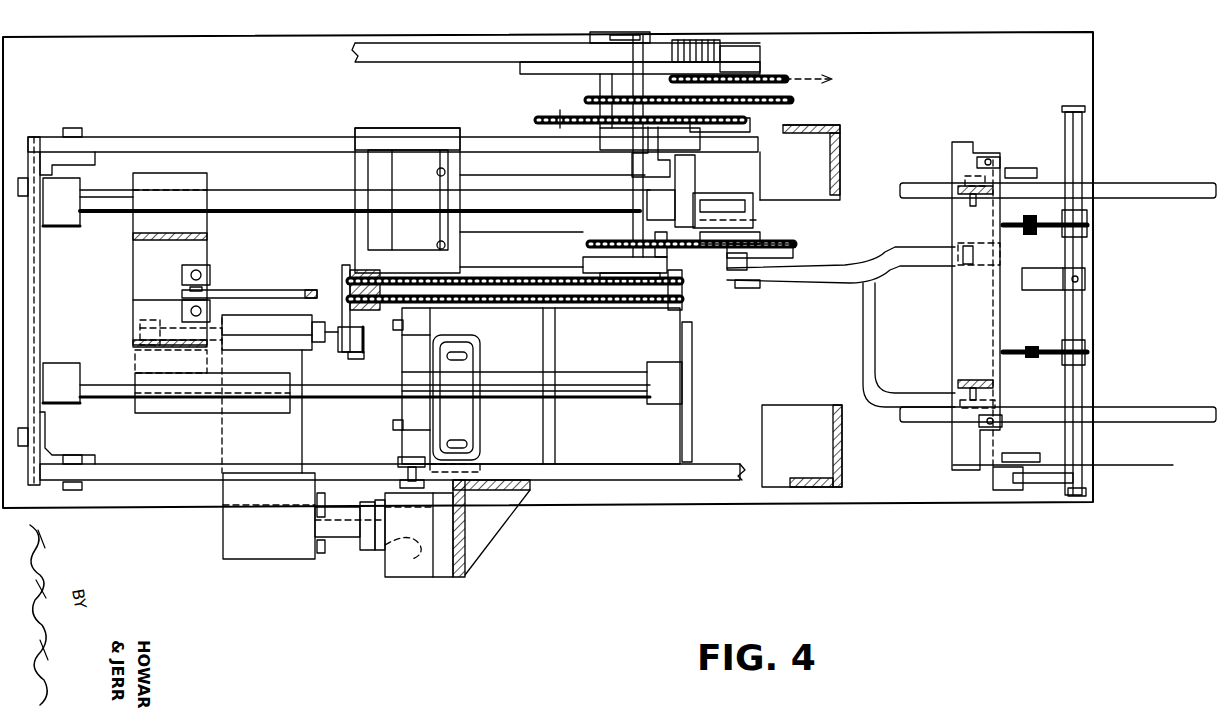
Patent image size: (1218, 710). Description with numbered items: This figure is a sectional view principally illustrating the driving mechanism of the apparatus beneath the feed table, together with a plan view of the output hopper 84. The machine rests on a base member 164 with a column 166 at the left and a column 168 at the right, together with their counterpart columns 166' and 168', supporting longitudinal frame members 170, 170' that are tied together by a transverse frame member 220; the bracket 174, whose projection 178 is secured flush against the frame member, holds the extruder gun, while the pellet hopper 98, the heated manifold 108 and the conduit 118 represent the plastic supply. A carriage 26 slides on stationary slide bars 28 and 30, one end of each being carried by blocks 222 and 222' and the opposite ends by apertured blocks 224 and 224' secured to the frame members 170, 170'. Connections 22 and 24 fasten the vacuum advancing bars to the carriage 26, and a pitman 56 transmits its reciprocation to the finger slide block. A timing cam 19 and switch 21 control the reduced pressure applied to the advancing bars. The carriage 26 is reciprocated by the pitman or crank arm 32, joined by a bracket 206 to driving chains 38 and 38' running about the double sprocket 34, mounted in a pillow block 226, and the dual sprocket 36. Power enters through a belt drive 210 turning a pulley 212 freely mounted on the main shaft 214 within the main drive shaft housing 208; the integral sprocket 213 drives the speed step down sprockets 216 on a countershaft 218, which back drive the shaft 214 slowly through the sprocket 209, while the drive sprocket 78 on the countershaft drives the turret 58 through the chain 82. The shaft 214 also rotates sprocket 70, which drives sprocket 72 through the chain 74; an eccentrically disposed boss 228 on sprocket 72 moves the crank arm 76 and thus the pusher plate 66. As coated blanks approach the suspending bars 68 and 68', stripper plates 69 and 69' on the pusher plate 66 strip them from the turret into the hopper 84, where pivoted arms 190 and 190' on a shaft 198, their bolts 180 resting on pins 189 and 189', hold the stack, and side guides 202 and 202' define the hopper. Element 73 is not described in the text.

The timing cam 19 is at (750, 183).
The switch 21 is at (690, 200).
The connection 22 is at (208, 240).
The connection 24 is at (135, 345).
The carriage 26 is at (135, 290).
The slide bar 28 is at (88, 232).
The slide bar 30 is at (121, 403).
The pitman or crank arm 32 is at (272, 348).
The double sprocket 34 is at (352, 265).
The dual sprocket 36 is at (687, 300).
The driving chain 38 is at (536, 386).
The driving chain 38' is at (515, 264).
The pitman 56 is at (264, 292).
The turret 58 is at (929, 76).
The pusher plate 66 is at (955, 308).
The suspending bar 68 is at (976, 375).
The suspending bar 68' is at (975, 208).
The stripper plate 69 is at (1019, 433).
The stripper plate 69' is at (1010, 137).
The sprocket 70 is at (583, 248).
The sprocket 72 is at (790, 237).
The sprocket 73 is at (773, 202).
The chain 74 is at (687, 258).
The crank arm 76 is at (812, 282).
The drive sprocket 78 is at (755, 40).
The chain 82 is at (795, 73).
The output hopper 84 is at (1138, 287).
The pellet hopper 98 is at (477, 336).
The manifold 108 is at (222, 540).
The conduit 118 is at (378, 560).
The base member 164 is at (995, 32).
The column 166 is at (103, 438).
The lug 166' is at (103, 141).
The column 168 is at (799, 416).
The support block 168' is at (840, 152).
The longitudinal frame member 170 is at (381, 324).
The longitudinal frame member 170' is at (393, 114).
The bracket 174 is at (502, 497).
The projection 178 is at (498, 545).
The bolt 180 is at (1018, 378).
The pin 189 is at (1104, 366).
The pin 189' is at (1040, 188).
The pivoted arm 190 is at (1045, 327).
The pivoted arm 190' is at (1077, 236).
The shaft 198 is at (1086, 325).
The side guide 202 is at (1058, 384).
The side guide 202' is at (1058, 210).
The bracket 206 is at (342, 304).
The main drive shaft housing 208 is at (592, 190).
The sprocket 209 is at (555, 112).
The belt drive 210 is at (405, 62).
The pulley 212 is at (535, 70).
The sprocket 213 is at (605, 92).
The main shaft 214 is at (640, 32).
The speed step down sprockets 216 is at (765, 113).
The countershaft 218 is at (752, 150).
The transverse frame member 220 is at (37, 303).
The block 222 is at (68, 221).
The block 222' is at (81, 360).
The apertured block 224 is at (633, 158).
The apertured block 224' is at (717, 392).
The pillow block 226 is at (355, 165).
The eccentrically disposed boss 228 is at (790, 262).